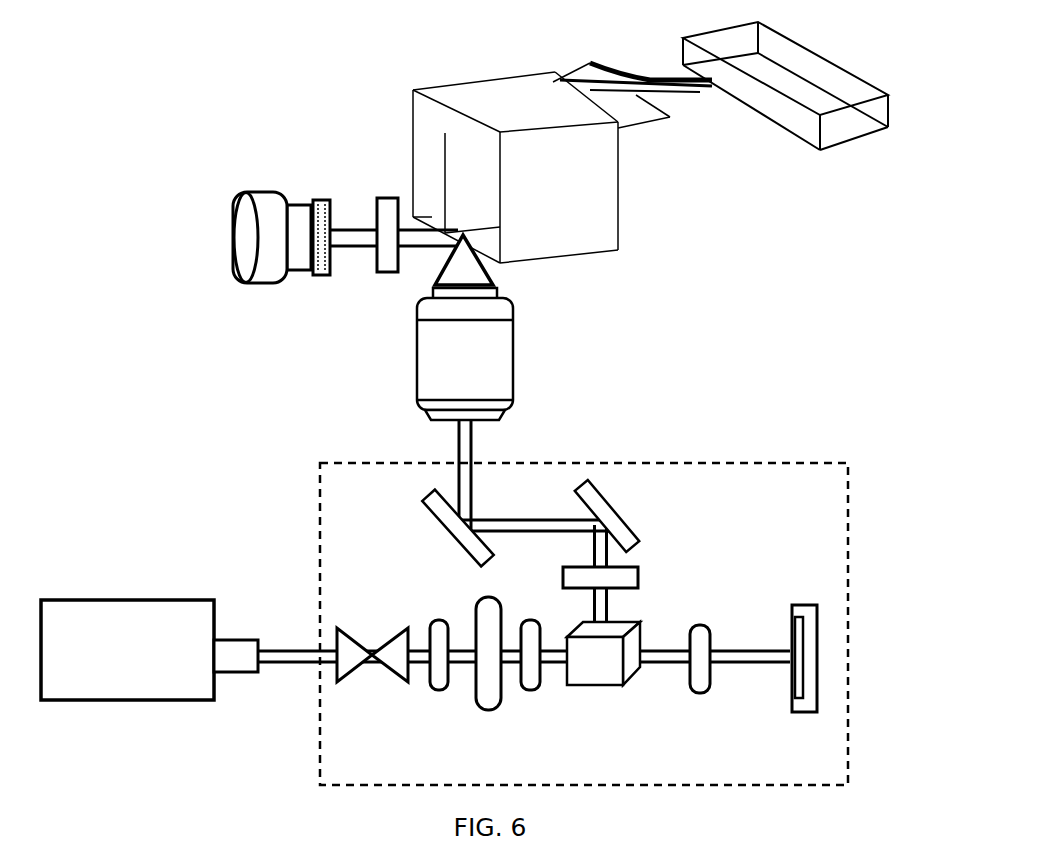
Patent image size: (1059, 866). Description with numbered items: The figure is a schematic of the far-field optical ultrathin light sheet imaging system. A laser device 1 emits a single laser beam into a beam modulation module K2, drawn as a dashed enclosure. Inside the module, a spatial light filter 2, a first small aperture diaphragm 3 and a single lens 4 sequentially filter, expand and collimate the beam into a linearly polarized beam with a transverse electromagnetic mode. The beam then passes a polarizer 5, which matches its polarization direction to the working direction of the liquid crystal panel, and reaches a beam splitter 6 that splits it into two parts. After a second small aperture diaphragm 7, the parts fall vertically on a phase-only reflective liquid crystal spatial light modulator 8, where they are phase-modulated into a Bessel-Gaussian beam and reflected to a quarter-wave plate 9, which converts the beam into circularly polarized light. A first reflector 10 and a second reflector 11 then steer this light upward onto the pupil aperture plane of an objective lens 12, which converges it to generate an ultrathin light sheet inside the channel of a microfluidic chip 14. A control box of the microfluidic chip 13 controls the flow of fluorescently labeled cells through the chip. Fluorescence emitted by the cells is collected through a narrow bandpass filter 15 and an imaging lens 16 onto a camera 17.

The laser device 1 is at (149, 682).
The spatial light filter 2 is at (372, 692).
The first small aperture diaphragm 3 is at (435, 689).
The single lens 4 is at (487, 680).
The polarizer 5 is at (529, 691).
The beam splitter 6 is at (603, 692).
The second small aperture diaphragm 7 is at (693, 694).
The phase-only reflective liquid crystal spatial light modulator 8 is at (802, 687).
The quarter-wave plate 9 is at (618, 581).
The first reflector 10 is at (623, 511).
The second reflector 11 is at (439, 529).
The objective lens 12 is at (489, 354).
The control box of the microfluidic chip 13 is at (724, 103).
The microfluidic chip 14 is at (541, 174).
The narrow bandpass filter 15 is at (380, 203).
The imaging lens 16 is at (322, 205).
The camera 17 is at (272, 209).
The beam modulation module K2 is at (586, 462).